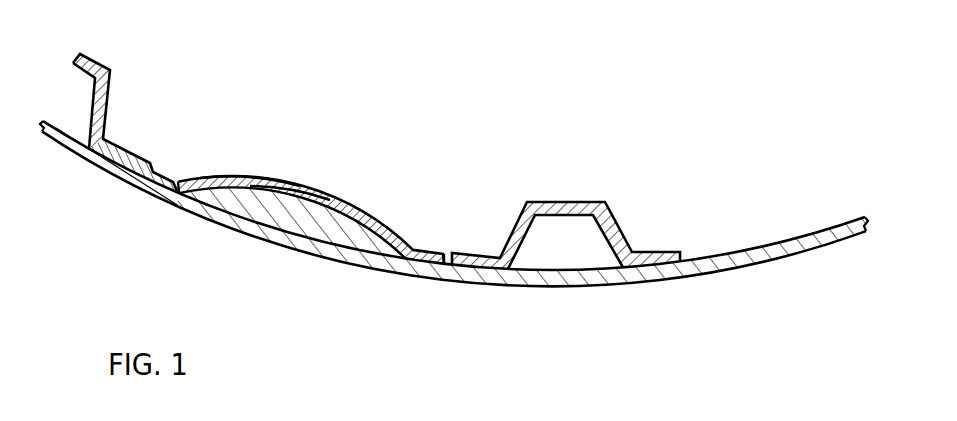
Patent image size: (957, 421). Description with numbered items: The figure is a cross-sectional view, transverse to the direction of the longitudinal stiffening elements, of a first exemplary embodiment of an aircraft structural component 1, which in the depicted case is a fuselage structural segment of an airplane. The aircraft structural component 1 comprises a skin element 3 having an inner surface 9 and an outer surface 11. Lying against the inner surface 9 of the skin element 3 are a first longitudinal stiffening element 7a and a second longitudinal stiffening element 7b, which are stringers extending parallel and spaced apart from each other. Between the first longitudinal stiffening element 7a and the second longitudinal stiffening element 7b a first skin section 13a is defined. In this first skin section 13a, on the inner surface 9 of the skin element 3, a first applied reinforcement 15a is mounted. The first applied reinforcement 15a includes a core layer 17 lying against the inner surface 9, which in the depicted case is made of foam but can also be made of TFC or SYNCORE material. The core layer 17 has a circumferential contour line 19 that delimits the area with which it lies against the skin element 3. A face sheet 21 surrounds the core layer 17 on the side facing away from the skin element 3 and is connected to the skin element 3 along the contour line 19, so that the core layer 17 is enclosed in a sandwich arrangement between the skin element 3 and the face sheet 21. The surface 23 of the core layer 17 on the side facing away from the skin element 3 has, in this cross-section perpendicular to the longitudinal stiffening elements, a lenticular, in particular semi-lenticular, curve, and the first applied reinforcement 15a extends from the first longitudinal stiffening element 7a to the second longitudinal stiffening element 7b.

The aircraft structural component 1 is at (190, 80).
The skin element 3 is at (459, 216).
The first longitudinal stiffening element 7a is at (110, 71).
The second longitudinal stiffening element 7b is at (623, 228).
The inner surface 9 is at (300, 225).
The outer surface 11 is at (347, 258).
The first skin section 13a is at (288, 232).
The first applied reinforcement 15a is at (330, 194).
The core layer 17 is at (322, 228).
The circumferential contour line 19 is at (172, 207).
The face sheet 21 is at (364, 213).
The surface of the core layer 23 is at (261, 178).